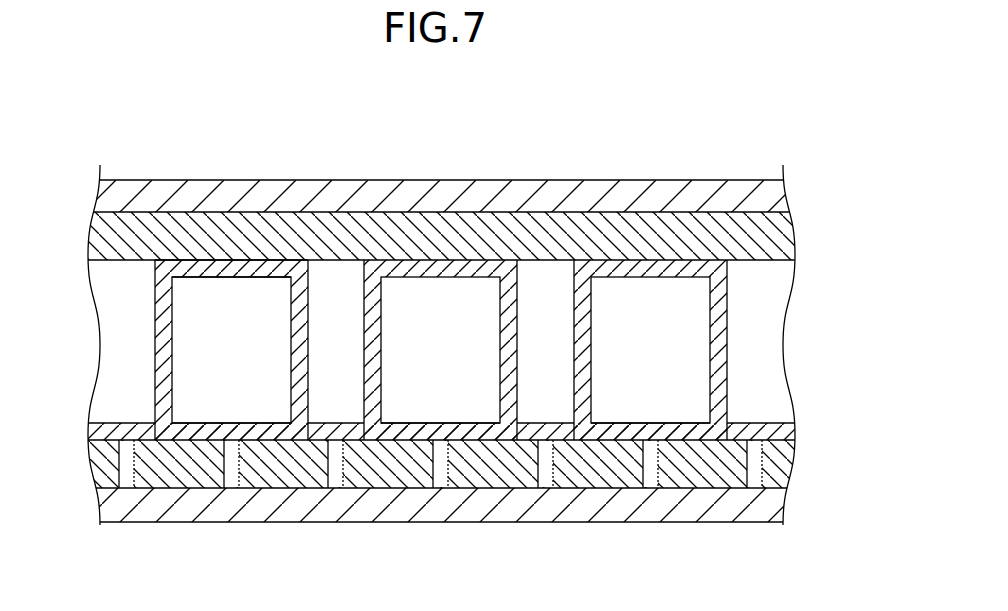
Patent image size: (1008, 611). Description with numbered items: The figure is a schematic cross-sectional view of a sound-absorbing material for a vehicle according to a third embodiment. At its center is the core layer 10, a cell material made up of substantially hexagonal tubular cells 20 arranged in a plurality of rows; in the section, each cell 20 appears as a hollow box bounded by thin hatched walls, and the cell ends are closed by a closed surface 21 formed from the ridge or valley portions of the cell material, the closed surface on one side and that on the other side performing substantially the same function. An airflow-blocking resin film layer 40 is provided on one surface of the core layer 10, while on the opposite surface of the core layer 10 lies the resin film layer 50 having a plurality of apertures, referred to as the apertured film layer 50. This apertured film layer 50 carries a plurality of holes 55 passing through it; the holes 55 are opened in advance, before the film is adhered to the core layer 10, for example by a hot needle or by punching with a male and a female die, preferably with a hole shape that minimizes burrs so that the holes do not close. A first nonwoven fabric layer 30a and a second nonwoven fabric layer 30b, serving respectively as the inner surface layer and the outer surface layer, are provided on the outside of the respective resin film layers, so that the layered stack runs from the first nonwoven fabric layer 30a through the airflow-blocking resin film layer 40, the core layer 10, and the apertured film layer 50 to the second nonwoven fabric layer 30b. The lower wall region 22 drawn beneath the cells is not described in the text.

The core layer 10 is at (790, 350).
The hexagonal tubular cell 20 is at (198, 313).
The closed surface 21 is at (232, 249).
The cell bottom wall 22 is at (219, 427).
The first nonwoven fabric layer 30a is at (780, 198).
The second nonwoven fabric layer 30b is at (778, 510).
The airflow-blocking resin film layer 40 is at (789, 235).
The apertured film layer 50 is at (790, 461).
The hole 55 is at (645, 494).